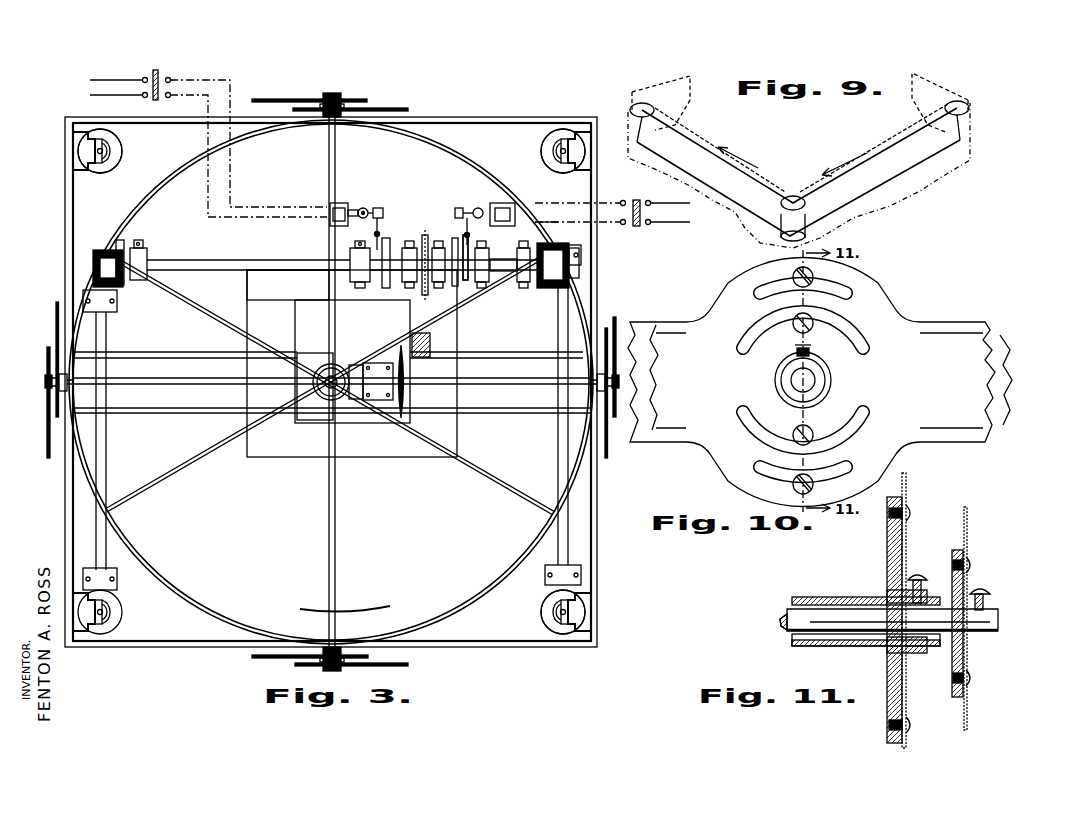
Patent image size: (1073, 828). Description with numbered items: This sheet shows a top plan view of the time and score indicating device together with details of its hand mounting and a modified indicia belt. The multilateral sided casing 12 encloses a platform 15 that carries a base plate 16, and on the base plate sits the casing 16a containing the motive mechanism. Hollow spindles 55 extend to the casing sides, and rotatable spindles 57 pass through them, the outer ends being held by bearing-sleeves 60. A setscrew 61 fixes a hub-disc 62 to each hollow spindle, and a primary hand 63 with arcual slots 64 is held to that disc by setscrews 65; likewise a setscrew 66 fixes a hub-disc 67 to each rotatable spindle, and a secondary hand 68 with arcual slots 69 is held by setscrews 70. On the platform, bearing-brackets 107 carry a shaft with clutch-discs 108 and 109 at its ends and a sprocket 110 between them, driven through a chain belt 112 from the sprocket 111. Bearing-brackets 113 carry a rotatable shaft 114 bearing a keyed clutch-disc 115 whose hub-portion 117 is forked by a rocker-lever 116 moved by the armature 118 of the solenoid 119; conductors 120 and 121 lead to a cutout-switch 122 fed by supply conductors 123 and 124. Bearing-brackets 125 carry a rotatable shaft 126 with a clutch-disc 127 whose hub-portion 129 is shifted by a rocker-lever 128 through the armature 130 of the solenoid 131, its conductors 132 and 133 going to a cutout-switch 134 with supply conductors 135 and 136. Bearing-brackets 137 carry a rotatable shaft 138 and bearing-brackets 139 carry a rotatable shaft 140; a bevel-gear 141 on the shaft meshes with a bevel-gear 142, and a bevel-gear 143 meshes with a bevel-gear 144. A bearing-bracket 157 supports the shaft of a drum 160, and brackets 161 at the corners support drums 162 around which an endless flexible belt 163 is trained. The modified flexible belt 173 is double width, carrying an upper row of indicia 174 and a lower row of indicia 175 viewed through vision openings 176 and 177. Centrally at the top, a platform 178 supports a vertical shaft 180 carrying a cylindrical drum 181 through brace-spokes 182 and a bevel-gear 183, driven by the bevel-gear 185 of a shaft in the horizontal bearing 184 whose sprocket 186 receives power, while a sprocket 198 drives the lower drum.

In FIG. 3, the multilateral sided casing 12 is at (472, 650).
In FIG. 9, the multilateral sided casing 12 is at (975, 137).
In FIG. 3, the platform 15 is at (331, 382).
In FIG. 3, the base plate 16 is at (352, 386).
In FIG. 3, the casing 16a is at (300, 300).
In FIG. 3, the hollow spindles 55 is at (190, 390).
In FIG. 11, the hollow spindles 55 is at (842, 597).
In FIG. 3, the rotatable spindles 57 is at (335, 95).
In FIG. 10, the rotatable spindles 57 is at (812, 378).
In FIG. 11, the rotatable spindles 57 is at (800, 618).
In FIG. 11, the bearing-sleeves 60 is at (893, 597).
In FIG. 11, the setscrew 61 is at (919, 570).
In FIG. 3, the hub-disc 62 is at (325, 125).
In FIG. 11, the hub-disc 62 is at (887, 545).
In FIG. 3, the primary hands 63 is at (400, 108).
In FIG. 10, the primary hands 63 is at (680, 443).
In FIG. 11, the primary hands 63 is at (906, 482).
In FIG. 10, the arcual slots 64 is at (840, 300).
In FIG. 10, the setscrews 65 is at (795, 272).
In FIG. 11, the setscrews 65 is at (910, 510).
In FIG. 10, the setscrew 66 is at (795, 350).
In FIG. 11, the setscrew 66 is at (990, 590).
In FIG. 3, the hub-disc 67 is at (325, 104).
In FIG. 10, the hub-disc 67 is at (783, 388).
In FIG. 11, the hub-disc 67 is at (957, 550).
In FIG. 3, the secondary hands 68 is at (262, 98).
In FIG. 10, the secondary hands 68 is at (962, 382).
In FIG. 11, the secondary hands 68 is at (968, 510).
In FIG. 10, the arcual slots 69 is at (850, 340).
In FIG. 10, the setscrews 70 is at (797, 317).
In FIG. 11, the setscrews 70 is at (970, 560).
In FIG. 3, the bearing-brackets 107 is at (408, 246).
In FIG. 3, the clutch-disc 108 is at (437, 246).
In FIG. 3, the clutch-disc 109 is at (455, 236).
In FIG. 3, the sprocket 110 is at (424, 292).
In FIG. 3, the sprocket 111 is at (420, 330).
In FIG. 3, the chain belt 112 is at (445, 318).
In FIG. 3, the bearing-brackets 113 is at (512, 258).
In FIG. 3, the rotatable shaft 114 is at (522, 282).
In FIG. 3, the clutch-disc 115 is at (466, 232).
In FIG. 3, the rocker-lever 116 is at (469, 218).
In FIG. 3, the hub-portion 117 is at (480, 312).
In FIG. 3, the armature 118 is at (488, 212).
In FIG. 3, the solenoid 119 is at (515, 212).
In FIG. 3, the conductor 120 is at (608, 200).
In FIG. 3, the conductor 121 is at (556, 226).
In FIG. 3, the cutout-switch 122 is at (636, 200).
In FIG. 3, the supply conductor 123 is at (665, 202).
In FIG. 3, the supply conductor 124 is at (664, 223).
In FIG. 3, the bearing-brackets 125 is at (150, 240).
In FIG. 3, the rotatable shaft 126 is at (220, 260).
In FIG. 3, the clutch-disc 127 is at (378, 302).
In FIG. 3, the rocker-lever 128 is at (380, 208).
In FIG. 3, the hub-portion 129 is at (355, 222).
In FIG. 3, the armature 130 is at (360, 208).
In FIG. 3, the solenoid 131 is at (330, 205).
In FIG. 3, the conductor 132 is at (252, 198).
In FIG. 3, the conductor 133 is at (258, 218).
In FIG. 3, the cutout-switch 134 is at (156, 70).
In FIG. 3, the supply conductor 135 is at (115, 78).
In FIG. 3, the supply conductor 136 is at (120, 97).
In FIG. 3, the bearing-brackets 137 is at (555, 268).
In FIG. 3, the rotatable shaft 138 is at (560, 465).
In FIG. 3, the bearing-brackets 139 is at (118, 303).
In FIG. 3, the rotatable shaft 140 is at (108, 460).
In FIG. 3, the bevel-gear 141 is at (543, 246).
In FIG. 3, the bevel-gear 142 is at (580, 262).
In FIG. 3, the bevel-gear 143 is at (108, 250).
In FIG. 3, the bevel-gear 144 is at (90, 268).
In FIG. 3, the bearing-bracket 157 is at (92, 635).
In FIG. 3, the drum 160 is at (122, 598).
In FIG. 3, the brackets 161 is at (572, 130).
In FIG. 3, the drums 162 is at (552, 135).
In FIG. 3, the endless flexible belt 163 is at (162, 640).
In FIG. 9, the flexible belt 173 is at (882, 190).
In FIG. 9, the upper row of indicia 174 is at (882, 165).
In FIG. 9, the lower row of indicia 175 is at (950, 150).
In FIG. 9, the vision openings 176 is at (975, 103).
In FIG. 9, the vision openings 177 is at (770, 180).
In FIG. 3, the platform 178 is at (303, 420).
In FIG. 3, the vertical shaft 180 is at (328, 364).
In FIG. 3, the cylindrical drum 181 is at (446, 609).
In FIG. 3, the brace-spokes 182 is at (190, 470).
In FIG. 3, the bevel-gear 183 is at (312, 370).
In FIG. 3, the horizontal bearing 184 is at (378, 381).
In FIG. 3, the bevel-gear 185 is at (355, 400).
In FIG. 3, the sprocket 186 is at (405, 401).
In FIG. 3, the sprocket 198 is at (420, 357).